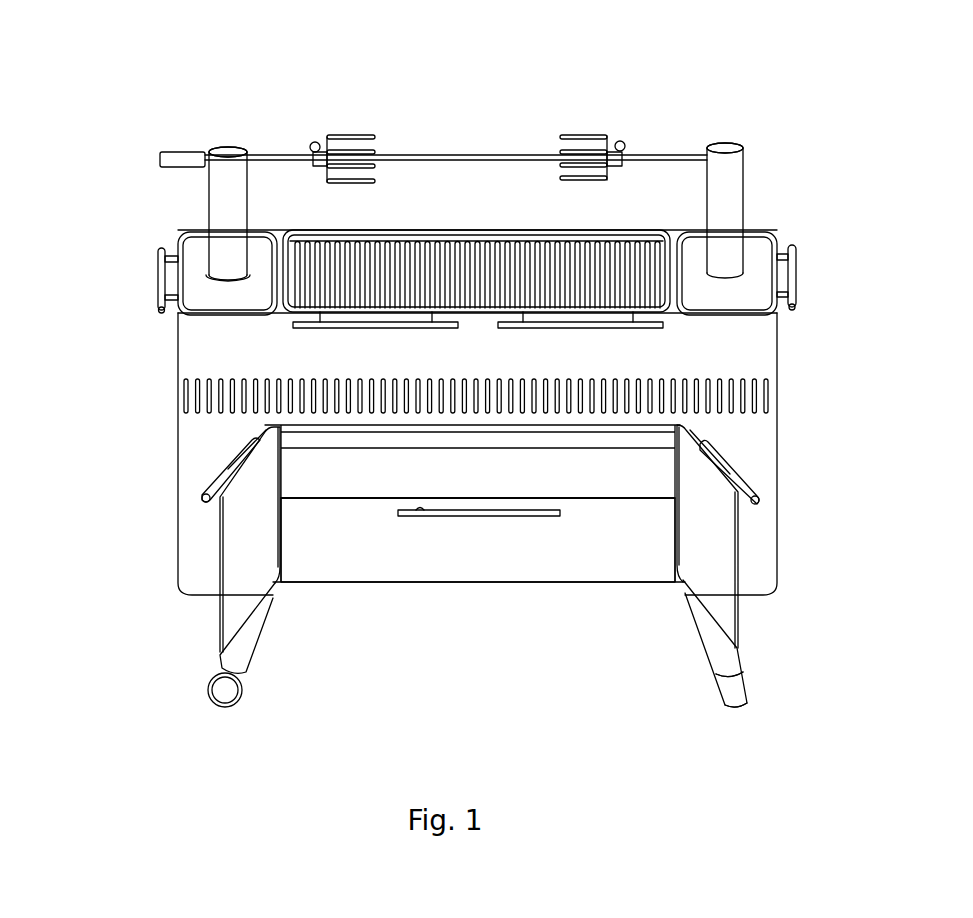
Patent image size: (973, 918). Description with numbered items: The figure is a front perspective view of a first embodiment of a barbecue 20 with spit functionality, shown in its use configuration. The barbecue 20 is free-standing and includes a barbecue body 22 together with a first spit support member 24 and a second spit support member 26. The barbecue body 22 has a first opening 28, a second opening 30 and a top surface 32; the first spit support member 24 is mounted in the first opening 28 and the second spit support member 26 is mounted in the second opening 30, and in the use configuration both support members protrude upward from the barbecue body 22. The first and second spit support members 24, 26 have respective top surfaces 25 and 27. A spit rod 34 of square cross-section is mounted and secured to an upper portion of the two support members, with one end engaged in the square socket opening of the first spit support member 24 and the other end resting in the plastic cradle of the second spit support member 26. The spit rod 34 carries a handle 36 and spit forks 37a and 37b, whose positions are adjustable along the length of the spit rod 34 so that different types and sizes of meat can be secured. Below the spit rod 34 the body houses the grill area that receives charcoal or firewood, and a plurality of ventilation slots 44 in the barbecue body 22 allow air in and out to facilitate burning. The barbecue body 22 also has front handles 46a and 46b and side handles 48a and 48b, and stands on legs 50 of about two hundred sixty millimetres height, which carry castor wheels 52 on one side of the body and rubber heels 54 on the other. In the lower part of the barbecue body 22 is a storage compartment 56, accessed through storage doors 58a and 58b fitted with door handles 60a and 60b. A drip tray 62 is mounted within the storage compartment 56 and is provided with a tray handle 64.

The barbecue 20 is at (885, 100).
The barbecue body 22 is at (745, 432).
The first spit support member 24 is at (222, 200).
The top surface 25 is at (226, 149).
The second spit support member 26 is at (735, 190).
The top surface 27 is at (733, 146).
The first opening 28 is at (210, 272).
The second opening 30 is at (745, 268).
The top surface 32 is at (220, 300).
The spit rod 34 is at (450, 154).
The handle 36 is at (177, 154).
The spit fork 37a is at (348, 136).
The spit fork 37b is at (607, 135).
The ventilation slots 44 is at (185, 395).
The front handle 46a is at (292, 323).
The front handle 46b is at (660, 323).
The side handle 48a is at (160, 306).
The side handle 48b is at (795, 272).
The legs 50 is at (245, 651).
The castor wheels 52 is at (221, 690).
The rubber heels 54 is at (737, 695).
The storage compartment 56 is at (397, 558).
The storage door 58a is at (240, 562).
The storage door 58b is at (705, 523).
The door handle 60a is at (228, 484).
The door handle 60b is at (740, 477).
The drip tray 62 is at (605, 503).
The tray handle 64 is at (492, 514).